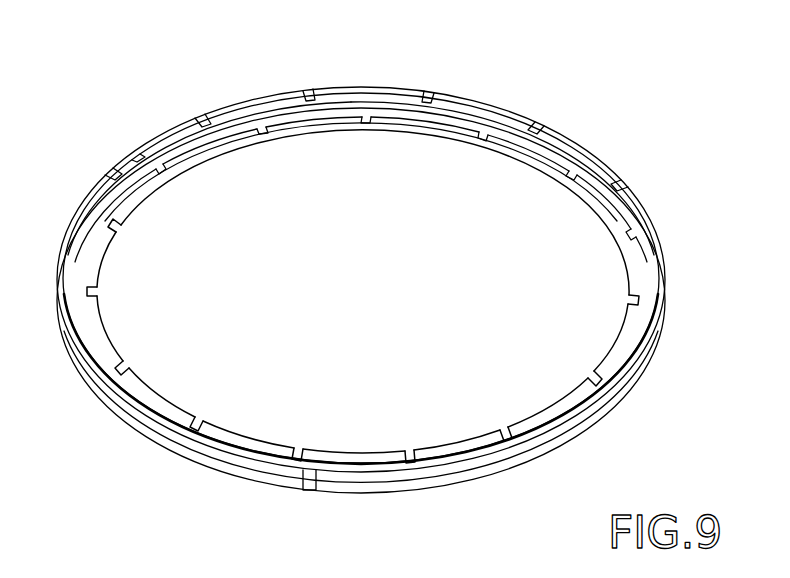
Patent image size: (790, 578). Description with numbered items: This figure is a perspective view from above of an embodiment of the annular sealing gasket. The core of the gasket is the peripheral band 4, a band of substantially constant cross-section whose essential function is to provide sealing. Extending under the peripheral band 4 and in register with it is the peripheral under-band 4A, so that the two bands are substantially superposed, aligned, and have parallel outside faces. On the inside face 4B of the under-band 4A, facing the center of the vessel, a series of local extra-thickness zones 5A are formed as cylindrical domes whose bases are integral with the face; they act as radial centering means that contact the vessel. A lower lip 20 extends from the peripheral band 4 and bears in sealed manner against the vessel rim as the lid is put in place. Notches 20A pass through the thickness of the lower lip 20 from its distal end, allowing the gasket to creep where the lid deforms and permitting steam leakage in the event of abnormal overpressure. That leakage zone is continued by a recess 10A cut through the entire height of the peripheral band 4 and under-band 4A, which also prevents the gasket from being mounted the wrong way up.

The peripheral band 4 is at (598, 411).
The peripheral under-band 4A is at (506, 112).
The inside face 4B is at (160, 145).
The local extra-thickness zones 5A is at (198, 122).
The lower lip 20 is at (95, 262).
The notches 20A is at (299, 447).
The recesses 10A is at (307, 482).